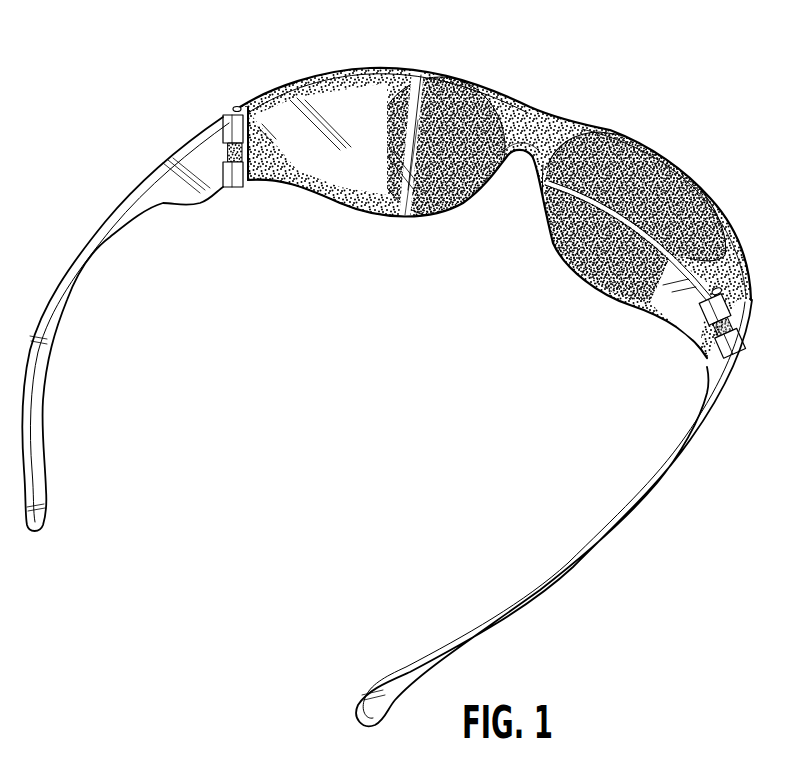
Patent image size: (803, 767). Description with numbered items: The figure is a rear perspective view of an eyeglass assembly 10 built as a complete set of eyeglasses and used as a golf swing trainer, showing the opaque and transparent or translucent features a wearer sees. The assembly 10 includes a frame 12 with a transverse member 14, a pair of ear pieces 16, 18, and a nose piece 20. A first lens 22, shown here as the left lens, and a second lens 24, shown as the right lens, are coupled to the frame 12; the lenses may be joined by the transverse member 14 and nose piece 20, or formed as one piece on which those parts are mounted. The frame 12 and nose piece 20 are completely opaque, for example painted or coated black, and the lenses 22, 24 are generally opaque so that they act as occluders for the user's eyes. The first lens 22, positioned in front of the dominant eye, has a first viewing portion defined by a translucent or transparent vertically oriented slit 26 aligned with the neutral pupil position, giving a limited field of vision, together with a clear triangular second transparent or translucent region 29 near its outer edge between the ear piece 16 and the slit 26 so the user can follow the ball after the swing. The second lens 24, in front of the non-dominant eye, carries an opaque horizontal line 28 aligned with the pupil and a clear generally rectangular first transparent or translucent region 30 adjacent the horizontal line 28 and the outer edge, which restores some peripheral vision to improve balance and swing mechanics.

The eyeglass assembly 10 is at (193, 63).
The frame 12 is at (279, 80).
The transverse member 14 is at (540, 112).
The ear piece 16 is at (58, 310).
The ear piece 18 is at (630, 517).
The nose piece 20 is at (538, 192).
The first lens 22 is at (357, 210).
The second lens 24 is at (607, 300).
The vertically oriented slit 26 is at (420, 80).
The horizontal line 28 is at (720, 218).
The second transparent or translucent region 29 is at (358, 134).
The first transparent or translucent region 30 is at (696, 316).